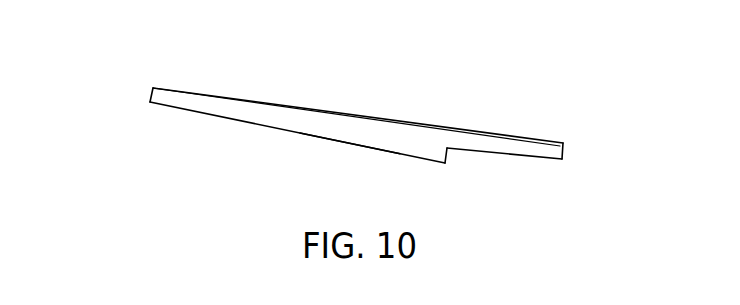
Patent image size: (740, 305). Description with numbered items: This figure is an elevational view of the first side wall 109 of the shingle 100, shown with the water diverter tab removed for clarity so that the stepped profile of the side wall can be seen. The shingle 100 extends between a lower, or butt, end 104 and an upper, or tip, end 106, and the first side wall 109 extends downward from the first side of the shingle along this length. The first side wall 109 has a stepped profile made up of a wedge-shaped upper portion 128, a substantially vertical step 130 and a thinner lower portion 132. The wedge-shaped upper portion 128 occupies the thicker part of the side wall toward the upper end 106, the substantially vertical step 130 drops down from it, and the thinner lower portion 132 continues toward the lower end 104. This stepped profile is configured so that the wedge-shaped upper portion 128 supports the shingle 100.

The shingle 100 is at (350, 84).
The lower end 104 is at (565, 150).
The upper end 106 is at (149, 97).
The first side wall 109 is at (369, 144).
The wedge-shaped upper portion 128 is at (255, 113).
The substantially vertical step 130 is at (448, 162).
The thinner lower portion 132 is at (517, 152).